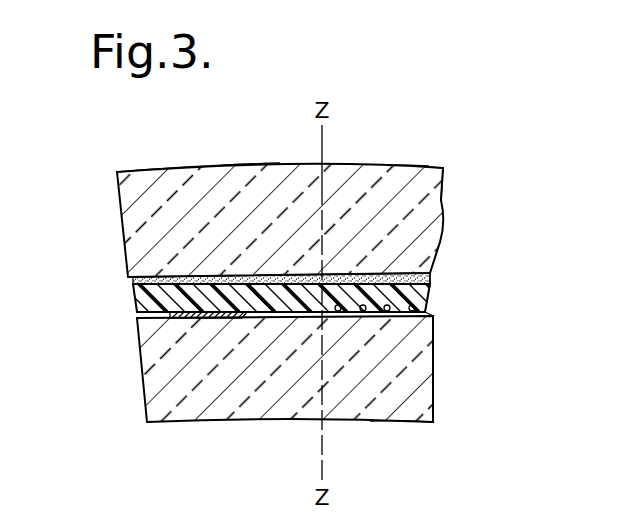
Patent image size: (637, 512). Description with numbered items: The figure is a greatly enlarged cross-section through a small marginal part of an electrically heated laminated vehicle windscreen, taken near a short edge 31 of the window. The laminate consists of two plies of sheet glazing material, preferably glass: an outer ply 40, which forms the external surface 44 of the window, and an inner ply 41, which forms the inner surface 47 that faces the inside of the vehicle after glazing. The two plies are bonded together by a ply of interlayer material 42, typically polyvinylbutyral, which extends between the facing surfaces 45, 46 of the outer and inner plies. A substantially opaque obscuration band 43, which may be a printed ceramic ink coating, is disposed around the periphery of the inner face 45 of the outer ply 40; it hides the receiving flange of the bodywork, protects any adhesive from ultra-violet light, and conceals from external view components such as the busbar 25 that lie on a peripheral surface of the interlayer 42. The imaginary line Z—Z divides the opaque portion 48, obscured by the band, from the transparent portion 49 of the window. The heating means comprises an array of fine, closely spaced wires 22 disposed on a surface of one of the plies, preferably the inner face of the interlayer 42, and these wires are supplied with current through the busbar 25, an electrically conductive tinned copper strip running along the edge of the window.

The wires 22 is at (393, 317).
The busbar 25 is at (182, 318).
The short edge 31 is at (117, 172).
The outer ply 40 is at (142, 208).
The inner ply 41 is at (167, 377).
The ply of interlayer material 42 is at (134, 306).
The obscuration band 43 is at (133, 281).
The external surface 44 is at (427, 157).
The inner face of outer ply 45 is at (441, 278).
The surface of inner ply 46 is at (441, 312).
The inner surface 47 is at (399, 433).
The opaque portion 48 is at (235, 160).
The transparent portion 49 is at (408, 157).